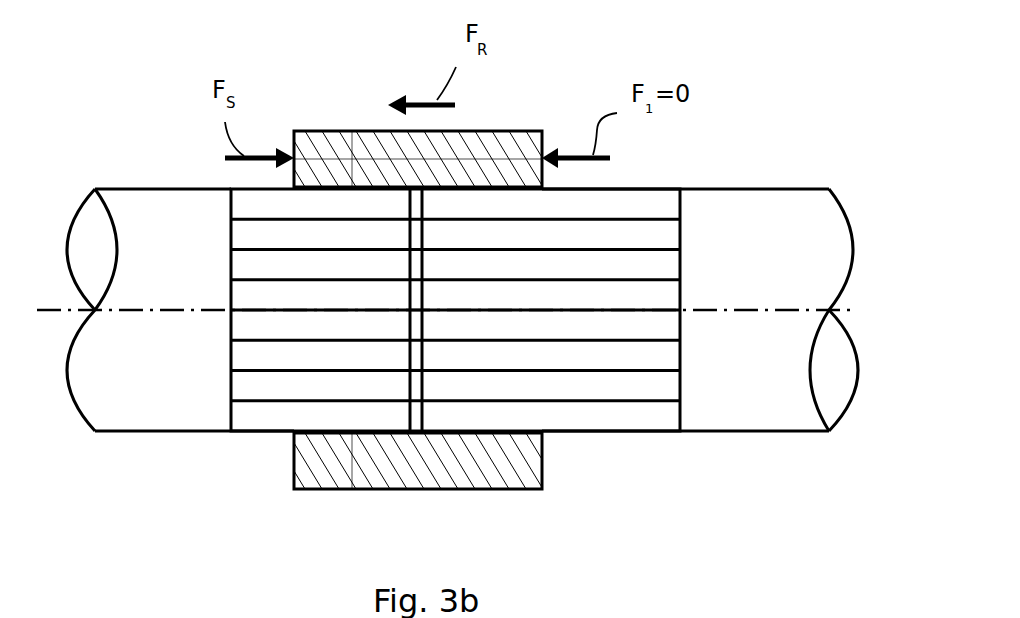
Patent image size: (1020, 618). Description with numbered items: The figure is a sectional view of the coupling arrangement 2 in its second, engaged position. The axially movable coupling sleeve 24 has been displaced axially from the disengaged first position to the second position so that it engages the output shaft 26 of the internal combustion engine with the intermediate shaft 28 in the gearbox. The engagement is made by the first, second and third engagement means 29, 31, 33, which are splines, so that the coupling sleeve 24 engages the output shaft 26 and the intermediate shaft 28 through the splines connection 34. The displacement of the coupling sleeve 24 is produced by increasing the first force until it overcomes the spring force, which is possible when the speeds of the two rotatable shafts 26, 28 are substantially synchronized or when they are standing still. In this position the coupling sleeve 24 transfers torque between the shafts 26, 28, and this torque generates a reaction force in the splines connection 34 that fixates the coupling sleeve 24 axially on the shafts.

The coupling arrangement 2 is at (334, 514).
The coupling sleeve 24 is at (333, 131).
The output shaft 26 is at (133, 189).
The intermediate shaft 28 is at (780, 188).
The first engagement means 29 is at (257, 434).
The second engagement means 31 is at (667, 188).
The third engagement means 33 is at (415, 392).
The splines connection 34 is at (592, 477).